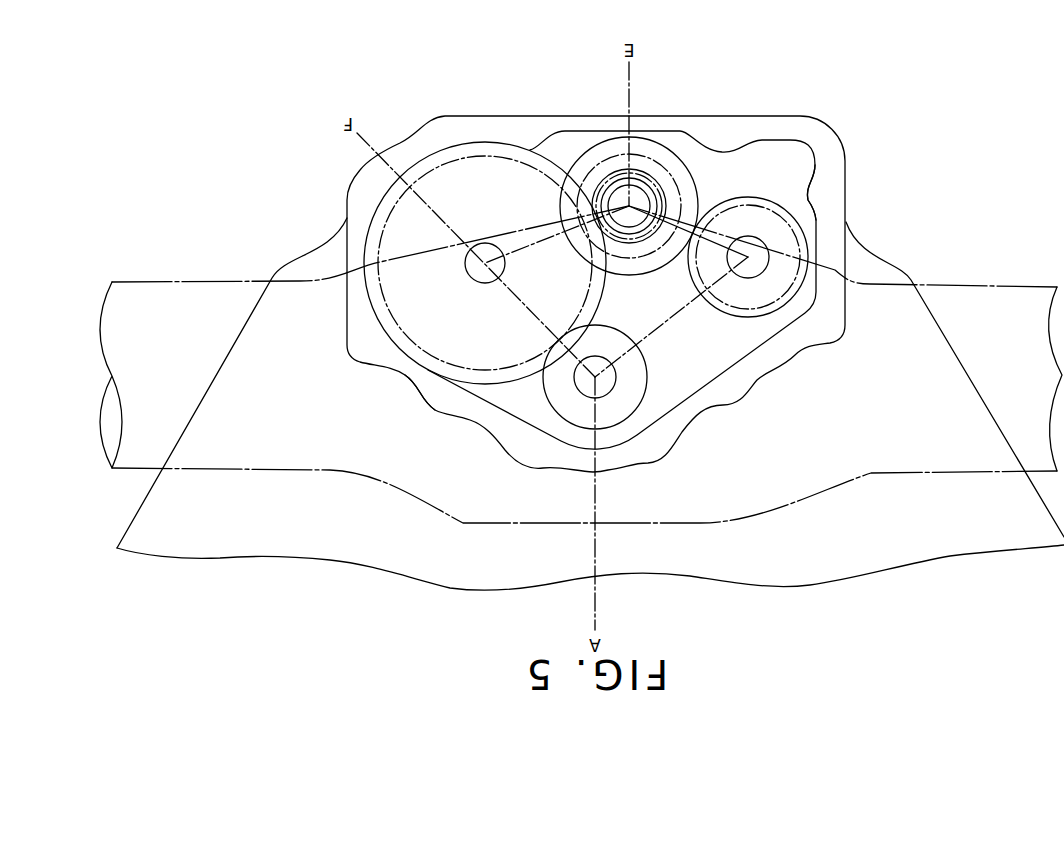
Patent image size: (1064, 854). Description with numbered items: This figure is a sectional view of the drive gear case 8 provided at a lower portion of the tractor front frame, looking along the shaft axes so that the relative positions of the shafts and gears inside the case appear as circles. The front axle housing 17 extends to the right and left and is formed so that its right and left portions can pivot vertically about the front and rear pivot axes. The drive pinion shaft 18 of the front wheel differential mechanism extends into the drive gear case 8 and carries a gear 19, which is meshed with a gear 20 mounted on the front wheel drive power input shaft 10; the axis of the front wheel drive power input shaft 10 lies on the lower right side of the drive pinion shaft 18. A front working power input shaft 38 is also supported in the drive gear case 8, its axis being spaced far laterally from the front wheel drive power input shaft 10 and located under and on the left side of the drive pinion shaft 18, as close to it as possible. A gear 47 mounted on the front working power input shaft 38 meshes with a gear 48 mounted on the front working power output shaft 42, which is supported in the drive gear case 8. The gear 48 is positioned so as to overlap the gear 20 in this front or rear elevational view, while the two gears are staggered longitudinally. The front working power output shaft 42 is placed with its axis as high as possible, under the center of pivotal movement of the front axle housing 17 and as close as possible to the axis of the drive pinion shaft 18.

The drive gear case 8 is at (342, 198).
The front wheel drive power input shaft 10 is at (472, 282).
The front axle housing 17 is at (162, 279).
The drive pinion shaft 18 is at (573, 378).
The gear 19 is at (511, 437).
The gear 20 is at (390, 322).
The front working power input shaft 38 is at (727, 308).
The front working power output shaft 42 is at (657, 178).
The gear 47 is at (806, 215).
The gear 48 is at (590, 145).